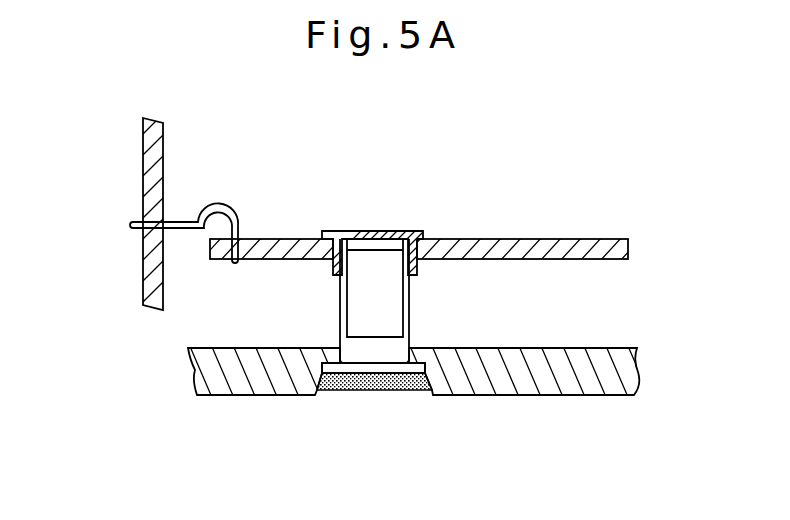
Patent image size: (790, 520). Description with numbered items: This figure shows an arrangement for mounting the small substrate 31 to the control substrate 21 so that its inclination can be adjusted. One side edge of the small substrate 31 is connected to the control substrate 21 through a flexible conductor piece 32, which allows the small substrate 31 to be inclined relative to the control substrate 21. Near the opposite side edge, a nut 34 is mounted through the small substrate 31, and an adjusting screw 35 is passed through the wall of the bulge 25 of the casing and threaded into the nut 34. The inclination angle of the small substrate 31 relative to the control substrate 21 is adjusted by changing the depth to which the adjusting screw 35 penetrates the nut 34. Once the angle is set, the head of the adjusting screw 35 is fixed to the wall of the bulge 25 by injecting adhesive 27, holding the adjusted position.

The control substrate 21 is at (157, 162).
The flexible conductor piece 32 is at (217, 204).
The small substrate 31 is at (523, 252).
The nut 34 is at (395, 232).
The adjusting screw 35 is at (368, 302).
The adhesive 27 is at (377, 385).
The bulge 25 is at (497, 380).